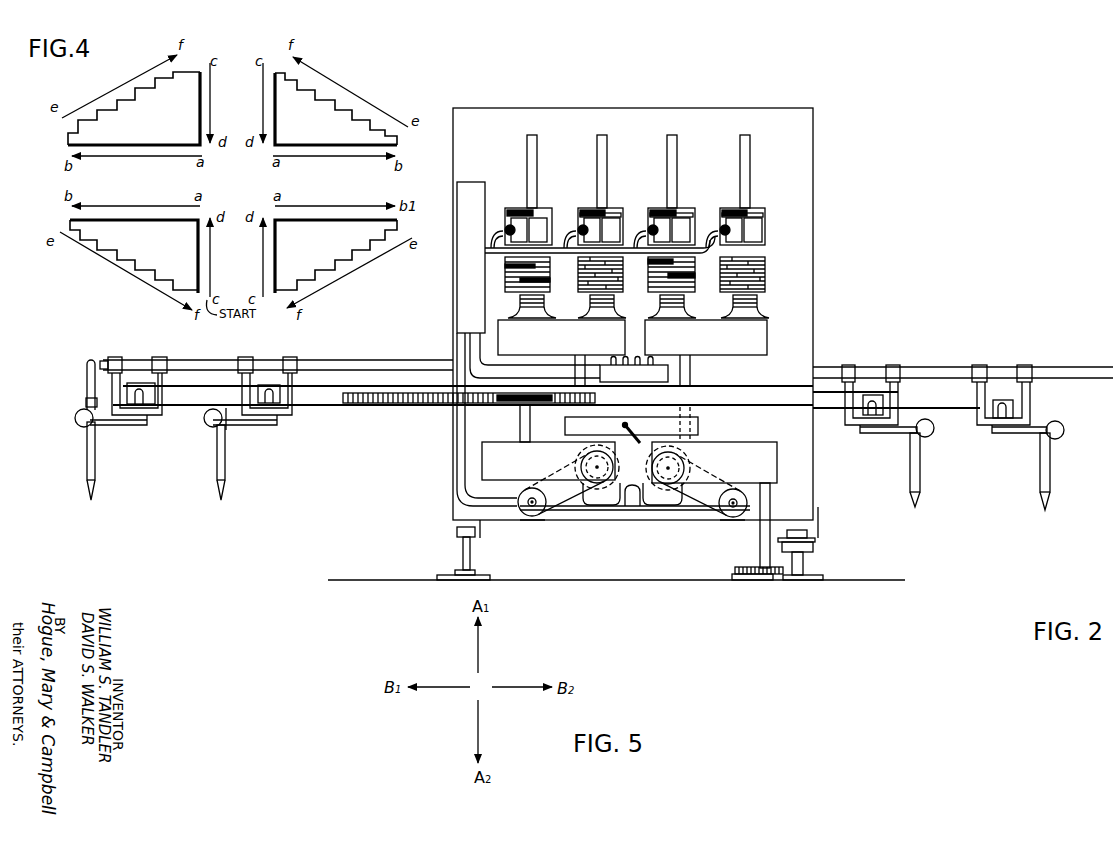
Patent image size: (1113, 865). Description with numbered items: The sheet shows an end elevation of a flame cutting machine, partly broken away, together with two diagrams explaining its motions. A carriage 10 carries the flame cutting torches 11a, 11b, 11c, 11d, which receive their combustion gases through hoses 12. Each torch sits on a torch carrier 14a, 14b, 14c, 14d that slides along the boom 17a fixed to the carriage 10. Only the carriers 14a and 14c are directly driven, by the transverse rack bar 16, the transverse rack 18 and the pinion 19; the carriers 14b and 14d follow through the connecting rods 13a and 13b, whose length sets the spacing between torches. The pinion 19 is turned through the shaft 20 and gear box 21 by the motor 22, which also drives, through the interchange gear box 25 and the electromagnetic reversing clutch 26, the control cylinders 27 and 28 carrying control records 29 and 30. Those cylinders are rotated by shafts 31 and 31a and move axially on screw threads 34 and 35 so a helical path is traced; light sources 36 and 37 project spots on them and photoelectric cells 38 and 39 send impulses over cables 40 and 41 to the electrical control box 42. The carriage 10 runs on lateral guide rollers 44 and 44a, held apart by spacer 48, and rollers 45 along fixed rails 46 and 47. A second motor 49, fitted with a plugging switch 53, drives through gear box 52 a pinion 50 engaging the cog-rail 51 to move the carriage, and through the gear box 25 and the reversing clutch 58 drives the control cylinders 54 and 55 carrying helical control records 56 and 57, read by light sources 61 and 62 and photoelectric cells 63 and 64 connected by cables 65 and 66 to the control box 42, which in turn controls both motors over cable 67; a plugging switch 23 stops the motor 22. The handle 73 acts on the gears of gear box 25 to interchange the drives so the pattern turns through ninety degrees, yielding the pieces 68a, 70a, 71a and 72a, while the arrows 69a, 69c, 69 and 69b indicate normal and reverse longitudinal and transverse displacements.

In FIG. 2, the carriage 10 is at (817, 475).
In FIG. 2, the flame cutting torch 11a is at (97, 467).
In FIG. 2, the flame cutting torch 11b is at (222, 463).
In FIG. 2, the flame cutting torch 11c is at (917, 475).
In FIG. 2, the flame cutting torch 11d is at (1047, 477).
In FIG. 2, the hose 12 is at (88, 388).
In FIG. 2, the connecting rod 13a is at (185, 401).
In FIG. 2, the connecting rod 13b is at (952, 410).
In FIG. 2, the torch carrier 14a is at (158, 357).
In FIG. 2, the torch carrier 14b is at (250, 357).
In FIG. 2, the torch carrier 14c is at (847, 365).
In FIG. 2, the torch carrier 14d is at (978, 365).
In FIG. 2, the transverse rack bar 16 is at (312, 402).
In FIG. 2, the boom 17a is at (337, 363).
In FIG. 2, the transverse rack 18 is at (380, 403).
In FIG. 2, the pinion 19 is at (470, 412).
In FIG. 2, the shaft 20 is at (520, 424).
In FIG. 2, the gear box 21 is at (500, 472).
In FIG. 2, the motor 22 is at (613, 461).
In FIG. 2, the plugging switch 23 is at (520, 514).
In FIG. 2, the interchange gear box 25 is at (698, 428).
In FIG. 2, the electromagnetic reversing clutch 26 is at (550, 345).
In FIG. 2, the control cylinder 27 is at (513, 207).
In FIG. 2, the control cylinder 28 is at (593, 210).
In FIG. 2, the control record 29 is at (550, 273).
In FIG. 2, the control record 30 is at (622, 269).
In FIG. 2, the shaft 31 is at (526, 142).
In FIG. 2, the shaft 31a is at (596, 148).
In FIG. 2, the screw thread 34 is at (541, 299).
In FIG. 2, the screw thread 35 is at (613, 300).
In FIG. 2, the light source 36 is at (547, 229).
In FIG. 2, the light source 37 is at (619, 229).
In FIG. 2, the photoelectric cell 38 is at (507, 228).
In FIG. 2, the photoelectric cell 39 is at (590, 213).
In FIG. 2, the cable 40 is at (503, 243).
In FIG. 2, the cable 41 is at (570, 236).
In FIG. 2, the electrical control box 42 is at (473, 292).
In FIG. 2, the lateral guide roller 44 is at (815, 547).
In FIG. 2, the lateral guide roller 44a is at (782, 547).
In FIG. 2, the roller 45 is at (458, 534).
In FIG. 2, the fixed rail 46 is at (807, 562).
In FIG. 2, the fixed rail 47 is at (470, 553).
In FIG. 2, the spacer 48 is at (817, 538).
In FIG. 2, the motor 49 is at (682, 464).
In FIG. 2, the pinion 50 is at (733, 578).
In FIG. 2, the cog-rail 51 is at (790, 581).
In FIG. 2, the gear box 52 is at (765, 448).
In FIG. 2, the plugging switch 53 is at (720, 518).
In FIG. 2, the control cylinder 54 is at (683, 210).
In FIG. 2, the control cylinder 55 is at (757, 210).
In FIG. 2, the helical control record 56 is at (695, 274).
In FIG. 2, the helical control record 57 is at (765, 277).
In FIG. 2, the electromagnetic reversing clutch 58 is at (727, 347).
In FIG. 2, the light source 61 is at (690, 232).
In FIG. 2, the light source 62 is at (758, 234).
In FIG. 2, the photoelectric cell 63 is at (663, 210).
In FIG. 2, the photoelectric cell 64 is at (730, 223).
In FIG. 2, the cable 65 is at (640, 236).
In FIG. 2, the cable 66 is at (711, 236).
In FIG. 2, the cable 67 is at (452, 490).
In FIG. 4, the piece 68a is at (152, 260).
In FIG. 5, the arrow B1 69 is at (452, 678).
In FIG. 5, the arrow A1 69a is at (480, 650).
In FIG. 5, the arrow B2 69b is at (517, 684).
In FIG. 5, the arrow A2 69c is at (477, 734).
In FIG. 4, the piece 70a is at (130, 108).
In FIG. 4, the piece 71a is at (333, 113).
In FIG. 4, the piece 72a is at (322, 260).
In FIG. 2, the handle 73 is at (633, 431).